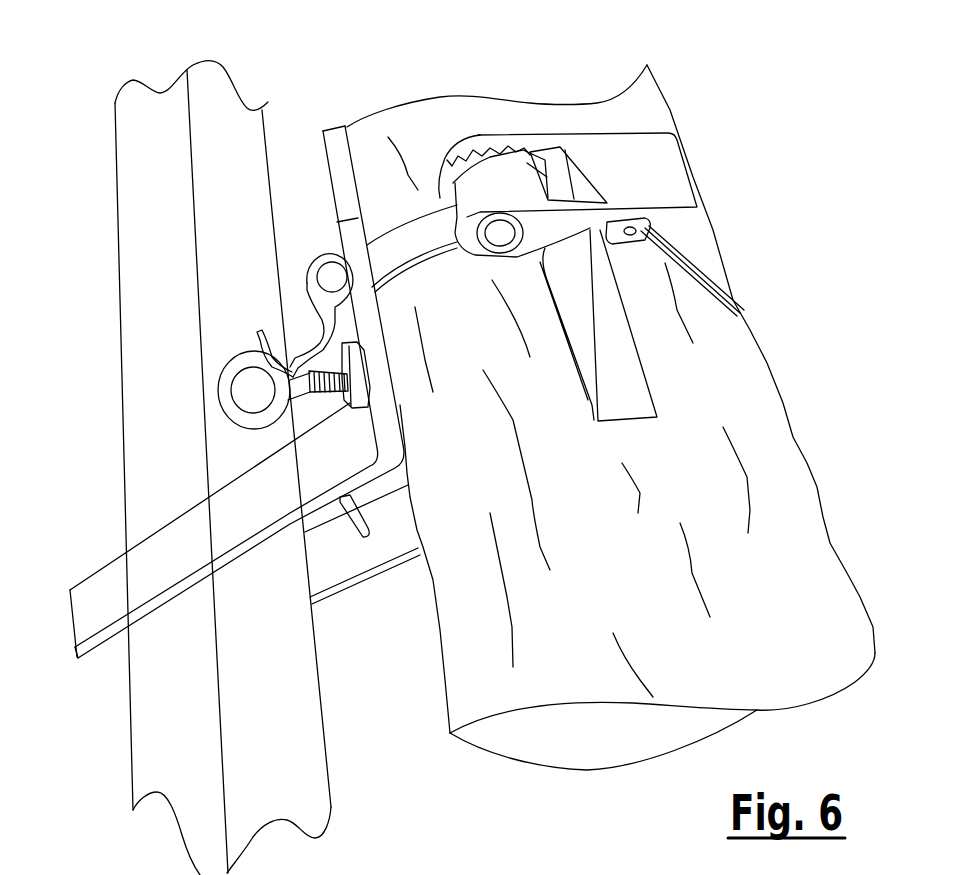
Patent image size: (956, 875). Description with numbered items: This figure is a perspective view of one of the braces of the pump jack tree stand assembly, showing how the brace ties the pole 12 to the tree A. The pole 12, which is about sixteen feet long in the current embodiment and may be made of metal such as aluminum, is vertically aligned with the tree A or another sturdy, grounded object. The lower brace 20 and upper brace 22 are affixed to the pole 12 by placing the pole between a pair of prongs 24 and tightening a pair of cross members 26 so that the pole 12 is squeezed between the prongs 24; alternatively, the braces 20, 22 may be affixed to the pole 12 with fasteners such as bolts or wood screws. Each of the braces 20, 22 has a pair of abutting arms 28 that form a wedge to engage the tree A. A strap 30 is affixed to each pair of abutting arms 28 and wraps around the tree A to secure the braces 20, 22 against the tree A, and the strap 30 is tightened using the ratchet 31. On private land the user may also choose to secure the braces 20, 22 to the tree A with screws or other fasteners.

The pole 12 is at (262, 110).
The abutting arms 28 is at (338, 162).
The lower brace 20 is at (189, 530).
The upper brace 22 is at (152, 553).
The prongs 24 is at (90, 653).
The cross members 26 is at (362, 533).
The ratchet 31 is at (600, 134).
The strap 30 is at (707, 263).
The tree A is at (757, 392).